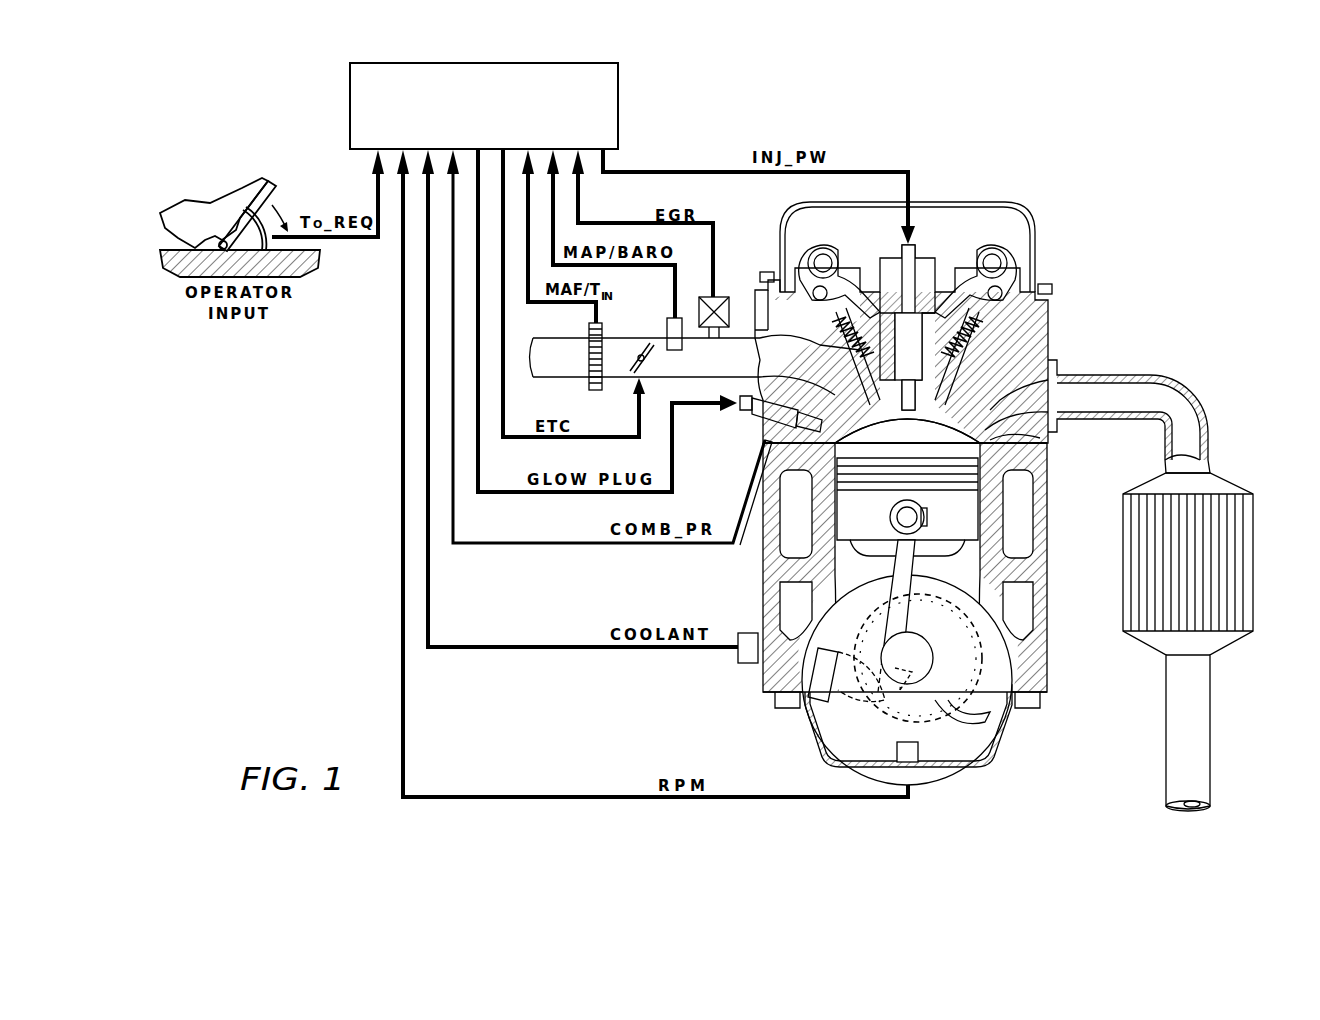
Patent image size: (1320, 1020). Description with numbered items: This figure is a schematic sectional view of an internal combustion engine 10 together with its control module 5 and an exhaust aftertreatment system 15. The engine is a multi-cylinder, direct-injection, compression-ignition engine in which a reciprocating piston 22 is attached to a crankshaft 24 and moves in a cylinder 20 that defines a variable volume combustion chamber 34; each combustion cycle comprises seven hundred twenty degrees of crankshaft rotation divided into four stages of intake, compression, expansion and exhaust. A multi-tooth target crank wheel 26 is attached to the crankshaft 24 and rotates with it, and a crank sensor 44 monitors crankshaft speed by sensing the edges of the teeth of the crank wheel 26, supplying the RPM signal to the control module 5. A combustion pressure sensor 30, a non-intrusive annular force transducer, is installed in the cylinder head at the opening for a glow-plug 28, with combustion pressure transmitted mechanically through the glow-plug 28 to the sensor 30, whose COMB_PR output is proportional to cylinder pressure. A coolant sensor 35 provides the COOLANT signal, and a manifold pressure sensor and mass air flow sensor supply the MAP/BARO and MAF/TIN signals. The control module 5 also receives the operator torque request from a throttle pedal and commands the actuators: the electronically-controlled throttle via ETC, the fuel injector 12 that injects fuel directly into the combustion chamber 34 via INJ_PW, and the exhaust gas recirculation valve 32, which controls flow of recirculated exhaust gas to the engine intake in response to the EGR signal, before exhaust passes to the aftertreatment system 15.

The control module 5 is at (598, 72).
The internal combustion engine 10 is at (982, 485).
The fuel injector 12 is at (911, 252).
The exhaust aftertreatment system 15 is at (1222, 492).
The cylinder 20 is at (1042, 438).
The piston 22 is at (907, 507).
The crankshaft 24 is at (980, 660).
The multi-tooth target crank wheel 26 is at (950, 676).
The glow-plug 28 is at (695, 408).
The combustion pressure sensor 30 is at (698, 546).
The exhaust gas recirculation valve 32 is at (718, 296).
The combustion chamber 34 is at (907, 434).
The coolant sensor 35 is at (700, 650).
The crank sensor 44 is at (917, 754).